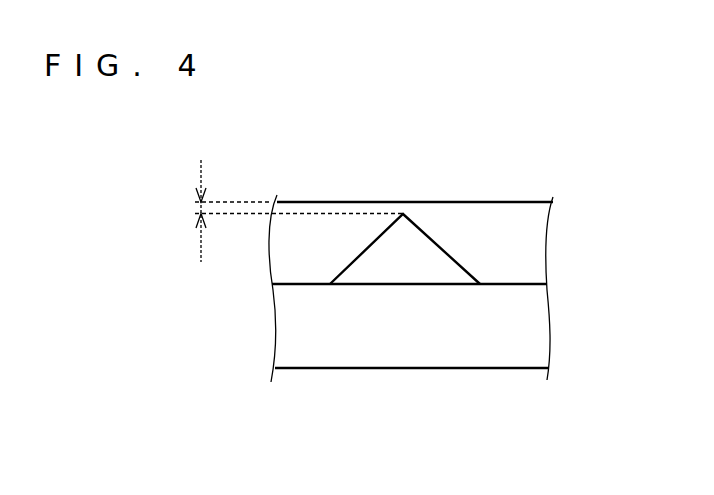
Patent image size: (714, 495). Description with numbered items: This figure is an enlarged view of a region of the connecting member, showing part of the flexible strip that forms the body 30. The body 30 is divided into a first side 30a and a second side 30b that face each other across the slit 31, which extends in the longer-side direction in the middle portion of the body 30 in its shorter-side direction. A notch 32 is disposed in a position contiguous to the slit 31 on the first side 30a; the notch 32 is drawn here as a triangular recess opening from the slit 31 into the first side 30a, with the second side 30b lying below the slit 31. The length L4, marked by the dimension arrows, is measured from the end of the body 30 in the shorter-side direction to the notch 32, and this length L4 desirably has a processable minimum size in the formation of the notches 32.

The body 30 is at (322, 376).
The first side 30a is at (512, 228).
The second side 30b is at (443, 344).
The slit 31 is at (518, 284).
The notch 32 is at (377, 242).
The length from the end in the shorter-side direction of the body L4 is at (280, 210).